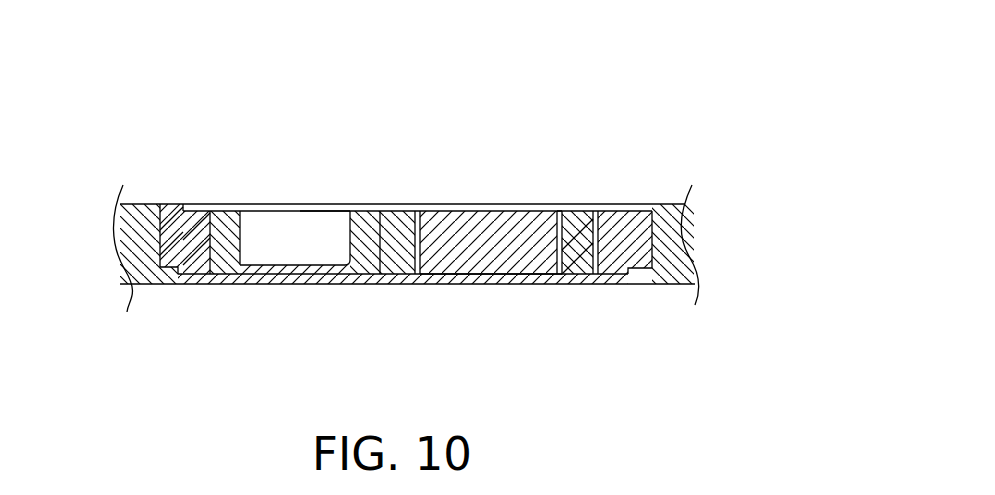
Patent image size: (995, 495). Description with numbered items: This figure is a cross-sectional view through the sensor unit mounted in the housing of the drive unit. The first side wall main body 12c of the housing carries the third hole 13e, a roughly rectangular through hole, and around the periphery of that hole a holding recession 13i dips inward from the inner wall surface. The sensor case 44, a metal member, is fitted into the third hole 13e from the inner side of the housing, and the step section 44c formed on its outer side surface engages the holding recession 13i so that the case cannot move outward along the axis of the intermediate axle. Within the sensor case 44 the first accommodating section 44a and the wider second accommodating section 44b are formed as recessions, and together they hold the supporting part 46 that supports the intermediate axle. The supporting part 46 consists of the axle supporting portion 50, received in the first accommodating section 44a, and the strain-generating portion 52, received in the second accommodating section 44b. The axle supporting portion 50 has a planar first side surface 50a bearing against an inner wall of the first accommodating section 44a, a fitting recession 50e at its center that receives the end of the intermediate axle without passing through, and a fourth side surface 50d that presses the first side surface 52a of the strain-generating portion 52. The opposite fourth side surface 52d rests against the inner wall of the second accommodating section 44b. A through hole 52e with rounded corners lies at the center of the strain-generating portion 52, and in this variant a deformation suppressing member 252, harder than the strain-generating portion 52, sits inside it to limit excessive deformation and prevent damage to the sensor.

The first side wall main body 12c is at (152, 216).
The holding recession 13i is at (640, 263).
The third hole 13e is at (207, 266).
The supporting part 46 is at (453, 170).
The sensor case 44 is at (176, 200).
The first accommodating section 44a is at (237, 252).
The second accommodating section 44b is at (580, 255).
The step section 44c is at (183, 248).
The axle supporting portion 50 is at (362, 206).
The first side surface 50a is at (200, 262).
The fourth side surface 50d is at (389, 258).
The fitting recession 50e is at (331, 214).
The strain-generating portion 52 is at (517, 204).
The first side surface 52a is at (362, 262).
The fourth side surface 52d is at (622, 268).
The through hole 52e is at (569, 232).
The deformation suppressing member 252 is at (497, 243).